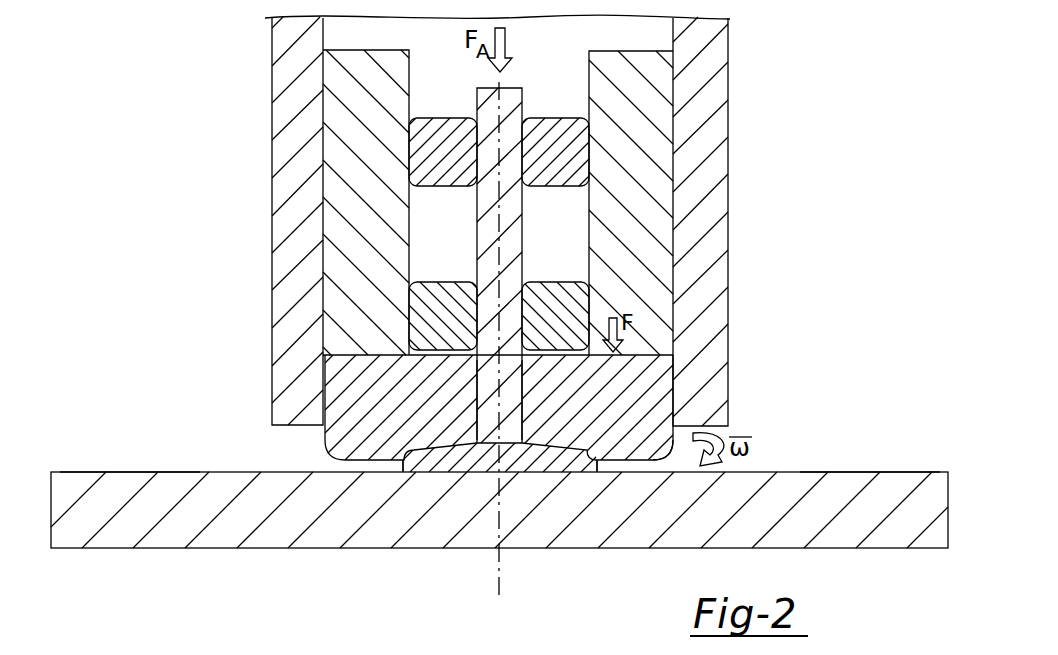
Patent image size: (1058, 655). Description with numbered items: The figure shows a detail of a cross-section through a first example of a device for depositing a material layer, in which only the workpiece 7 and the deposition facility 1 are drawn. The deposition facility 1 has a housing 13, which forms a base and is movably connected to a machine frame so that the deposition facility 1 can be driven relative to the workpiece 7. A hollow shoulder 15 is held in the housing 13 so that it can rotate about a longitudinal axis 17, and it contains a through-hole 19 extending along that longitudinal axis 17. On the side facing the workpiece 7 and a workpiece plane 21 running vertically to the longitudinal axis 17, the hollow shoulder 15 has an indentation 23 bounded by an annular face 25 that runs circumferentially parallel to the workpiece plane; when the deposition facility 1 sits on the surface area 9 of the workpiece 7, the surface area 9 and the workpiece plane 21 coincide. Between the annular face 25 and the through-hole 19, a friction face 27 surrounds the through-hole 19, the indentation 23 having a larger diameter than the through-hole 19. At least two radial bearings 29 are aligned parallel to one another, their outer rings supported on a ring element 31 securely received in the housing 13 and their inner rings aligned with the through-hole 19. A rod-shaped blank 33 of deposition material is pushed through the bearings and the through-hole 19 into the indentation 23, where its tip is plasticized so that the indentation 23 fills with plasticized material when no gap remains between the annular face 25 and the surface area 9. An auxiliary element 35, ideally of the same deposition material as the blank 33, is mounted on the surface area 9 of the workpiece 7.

The deposition facility 1 is at (742, 198).
The workpiece 7 is at (308, 526).
The surface area 9 is at (120, 471).
The housing 13 is at (705, 101).
The hollow shoulder 15 is at (592, 416).
The longitudinal axis 17 is at (500, 582).
The through-hole 19 is at (478, 400).
The workpiece plane 21 is at (872, 472).
The indentation 23 is at (588, 457).
The annular face 25 is at (648, 462).
The friction face 27 is at (415, 449).
The radial bearings 29 is at (457, 166).
The ring element 31 is at (637, 205).
The blank 33 is at (509, 108).
The auxiliary element 35 is at (468, 458).